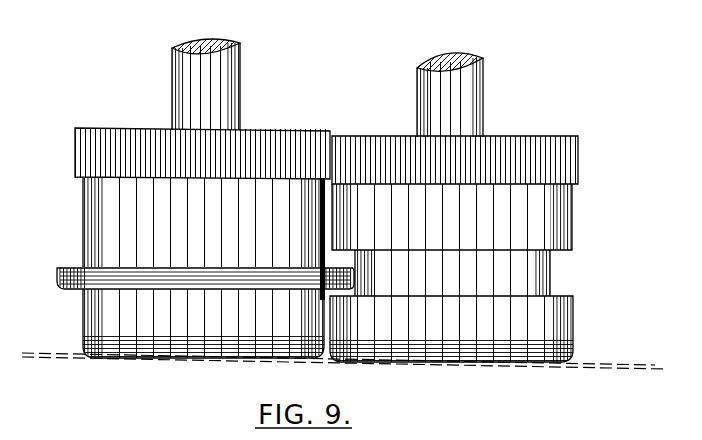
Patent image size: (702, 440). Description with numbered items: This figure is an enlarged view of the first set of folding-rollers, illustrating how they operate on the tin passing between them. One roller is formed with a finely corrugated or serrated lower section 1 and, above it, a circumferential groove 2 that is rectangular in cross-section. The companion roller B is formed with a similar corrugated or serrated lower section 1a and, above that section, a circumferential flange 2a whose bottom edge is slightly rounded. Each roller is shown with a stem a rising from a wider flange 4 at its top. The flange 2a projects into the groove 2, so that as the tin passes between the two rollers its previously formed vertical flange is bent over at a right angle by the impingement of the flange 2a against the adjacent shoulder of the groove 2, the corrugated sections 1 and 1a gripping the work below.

The stem a is at (327, 85).
The flange 4 is at (75, 156).
The companion roller B is at (172, 240).
The circumferential flange 2a is at (205, 278).
The corrugated or serrated lower section 1a is at (203, 323).
The circumferential groove 2 is at (452, 273).
The corrugated or serrated lower section 1 is at (432, 333).